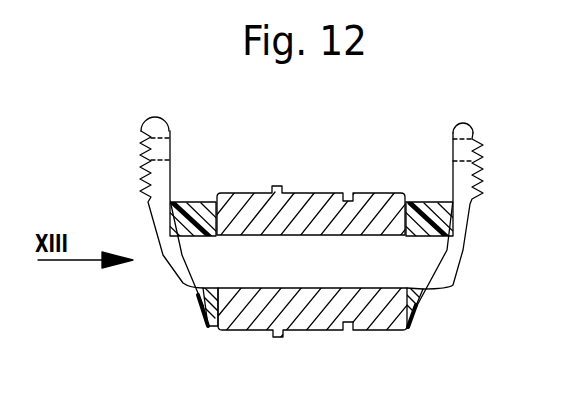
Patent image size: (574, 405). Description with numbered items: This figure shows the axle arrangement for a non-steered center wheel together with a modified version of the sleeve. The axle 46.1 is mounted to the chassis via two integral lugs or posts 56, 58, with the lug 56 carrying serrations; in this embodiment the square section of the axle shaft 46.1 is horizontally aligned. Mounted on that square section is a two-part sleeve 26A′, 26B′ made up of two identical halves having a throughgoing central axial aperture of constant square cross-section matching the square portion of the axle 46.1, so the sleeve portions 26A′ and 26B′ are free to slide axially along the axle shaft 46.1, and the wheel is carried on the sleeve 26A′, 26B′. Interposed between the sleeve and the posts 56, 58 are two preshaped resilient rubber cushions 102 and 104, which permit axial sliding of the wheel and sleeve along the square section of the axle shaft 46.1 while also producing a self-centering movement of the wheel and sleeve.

The lug 56 is at (170, 267).
The post 58 is at (450, 272).
The sleeve portion 26B′ is at (307, 215).
The sleeve portion 26A′ is at (373, 310).
The resilient rubber cushion 102 is at (198, 210).
The resilient rubber cushion 104 is at (432, 217).
The axle shaft 46.1 is at (210, 318).